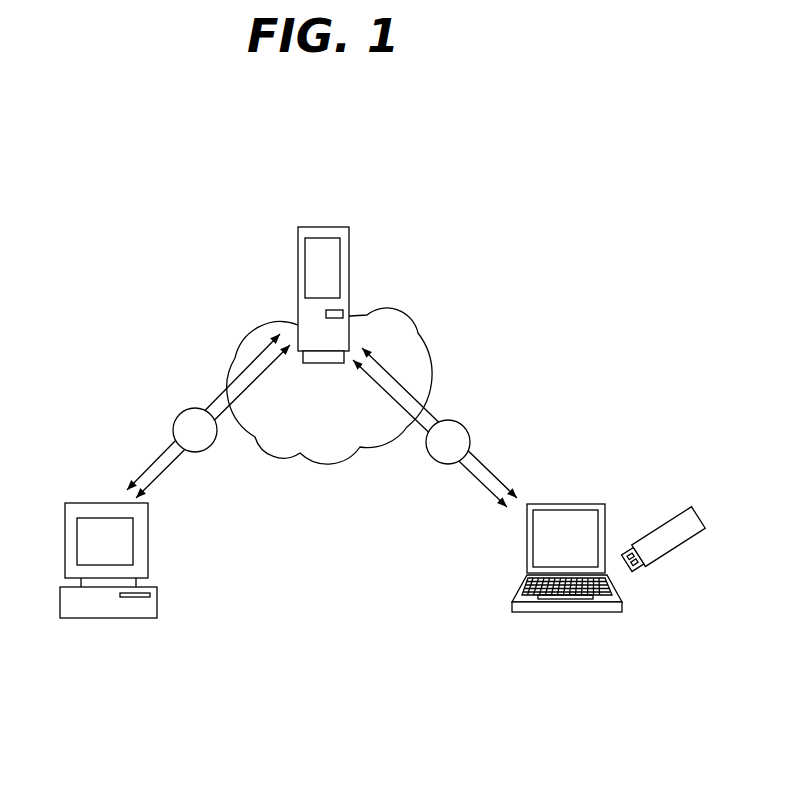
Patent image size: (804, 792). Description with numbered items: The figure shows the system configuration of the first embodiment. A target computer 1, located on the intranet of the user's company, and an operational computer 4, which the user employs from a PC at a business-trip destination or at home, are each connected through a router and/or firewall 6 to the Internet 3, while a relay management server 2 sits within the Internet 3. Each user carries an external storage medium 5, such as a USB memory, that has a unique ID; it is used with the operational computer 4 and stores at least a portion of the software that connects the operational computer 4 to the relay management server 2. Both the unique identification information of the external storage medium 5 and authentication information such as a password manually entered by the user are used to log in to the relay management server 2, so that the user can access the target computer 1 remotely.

The target computer 1 is at (102, 618).
The relay management server 2 is at (317, 226).
The Internet 3 is at (327, 464).
The operational computer 4 is at (570, 613).
The external storage medium 5 is at (680, 548).
The router and/or firewall 6 is at (175, 416).